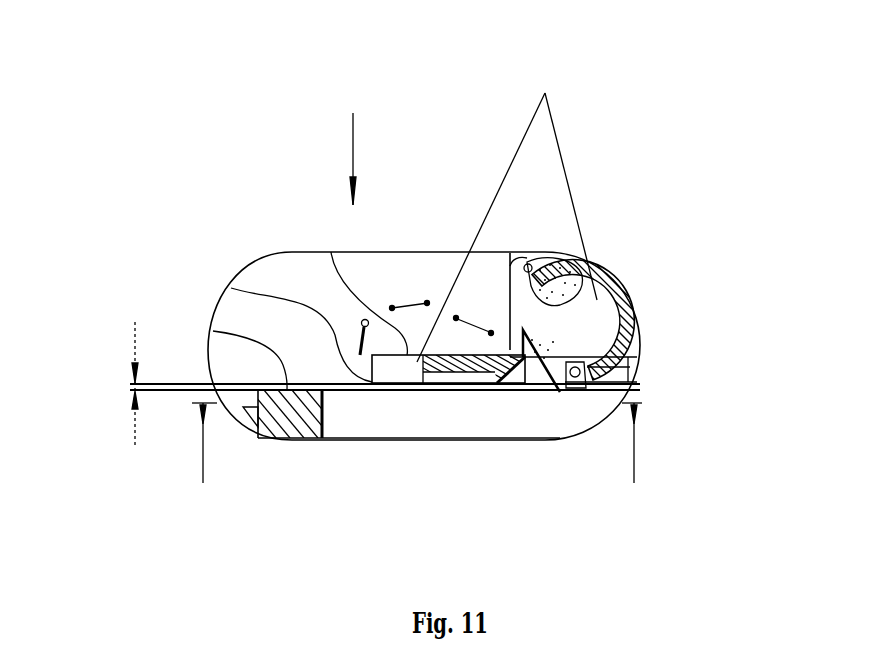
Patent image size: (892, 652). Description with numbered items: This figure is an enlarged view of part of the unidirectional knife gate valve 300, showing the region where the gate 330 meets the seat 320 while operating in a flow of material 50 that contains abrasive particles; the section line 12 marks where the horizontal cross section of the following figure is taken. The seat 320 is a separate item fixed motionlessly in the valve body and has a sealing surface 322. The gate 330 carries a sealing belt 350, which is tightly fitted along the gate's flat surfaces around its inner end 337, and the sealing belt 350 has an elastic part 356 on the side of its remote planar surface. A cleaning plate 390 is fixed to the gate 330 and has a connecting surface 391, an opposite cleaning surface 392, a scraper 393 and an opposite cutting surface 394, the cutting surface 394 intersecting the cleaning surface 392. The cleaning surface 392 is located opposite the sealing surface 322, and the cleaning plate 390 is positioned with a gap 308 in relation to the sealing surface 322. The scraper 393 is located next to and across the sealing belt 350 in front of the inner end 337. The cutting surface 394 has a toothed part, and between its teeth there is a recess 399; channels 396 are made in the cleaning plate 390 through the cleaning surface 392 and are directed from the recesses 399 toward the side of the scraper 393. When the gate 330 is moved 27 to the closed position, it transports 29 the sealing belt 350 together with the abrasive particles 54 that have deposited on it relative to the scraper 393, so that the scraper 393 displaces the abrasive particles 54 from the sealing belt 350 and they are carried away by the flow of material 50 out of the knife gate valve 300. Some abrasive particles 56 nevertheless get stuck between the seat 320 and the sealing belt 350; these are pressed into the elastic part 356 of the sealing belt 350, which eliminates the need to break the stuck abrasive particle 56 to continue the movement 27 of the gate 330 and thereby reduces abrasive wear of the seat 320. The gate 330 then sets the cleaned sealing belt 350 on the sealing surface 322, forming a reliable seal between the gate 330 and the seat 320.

The knife gate valve 300 is at (440, 27).
The gap 308 is at (130, 384).
The seat 320 is at (300, 434).
The sealing surface 322 is at (213, 331).
The cutting surface 394 is at (231, 288).
The connecting surface 391 is at (331, 252).
The cleaning surface 392 is at (457, 392).
The channels 396 is at (466, 392).
The recess 399 is at (408, 392).
The cleaning plate 390 is at (488, 392).
The scraper 393 is at (528, 392).
The abrasive particles 54 is at (512, 254).
The inner end 337 is at (567, 312).
The gate 330 is at (607, 323).
The sealing belt 350 is at (645, 338).
The elastic part 356 is at (608, 376).
The movement to the closed position 27 is at (545, 93).
The transport of the sealing belt 29 is at (722, 232).
The flow of material 50 is at (352, 143).
The section line 12 is at (407, 404).
The abrasive particles 56 is at (630, 397).